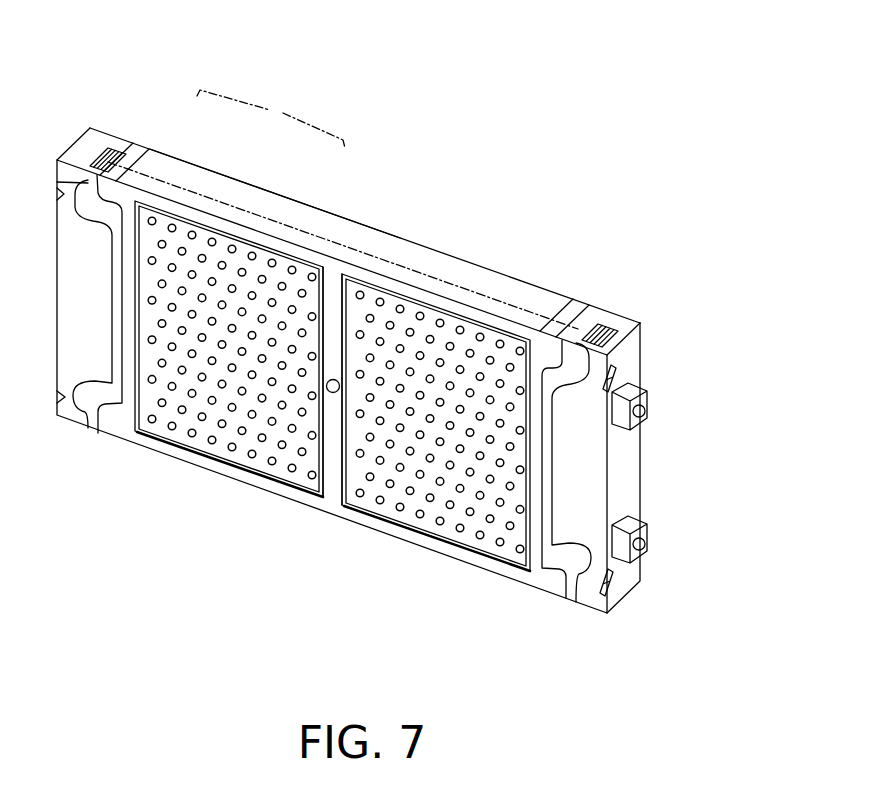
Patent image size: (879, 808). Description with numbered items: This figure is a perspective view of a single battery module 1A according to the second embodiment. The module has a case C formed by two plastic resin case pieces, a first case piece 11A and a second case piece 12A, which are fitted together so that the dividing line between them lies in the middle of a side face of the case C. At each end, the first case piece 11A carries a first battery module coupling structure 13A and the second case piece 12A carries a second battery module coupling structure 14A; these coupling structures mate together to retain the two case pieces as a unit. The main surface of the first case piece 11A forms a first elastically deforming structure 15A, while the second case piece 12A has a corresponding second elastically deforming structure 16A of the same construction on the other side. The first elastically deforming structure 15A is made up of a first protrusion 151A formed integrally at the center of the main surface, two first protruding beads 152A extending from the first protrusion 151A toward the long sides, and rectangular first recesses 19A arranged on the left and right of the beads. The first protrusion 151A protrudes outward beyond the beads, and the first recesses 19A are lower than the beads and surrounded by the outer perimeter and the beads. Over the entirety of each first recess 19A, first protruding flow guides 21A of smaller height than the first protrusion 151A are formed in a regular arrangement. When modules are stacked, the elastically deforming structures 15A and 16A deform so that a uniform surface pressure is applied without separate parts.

The battery module 1A is at (672, 97).
The first case piece 11A is at (188, 190).
The second case piece 12A is at (273, 196).
The case C is at (271, 112).
The first battery module coupling structure 13A is at (77, 445).
The second battery module coupling structure 14A is at (140, 128).
The first elastically deforming structure 15A is at (281, 520).
The first protrusion 151A is at (333, 394).
The first protruding beads 152A is at (325, 452).
The second elastically deforming structure 16A is at (457, 242).
The first recesses 19A is at (167, 415).
The first protruding flow guides 21A is at (457, 365).